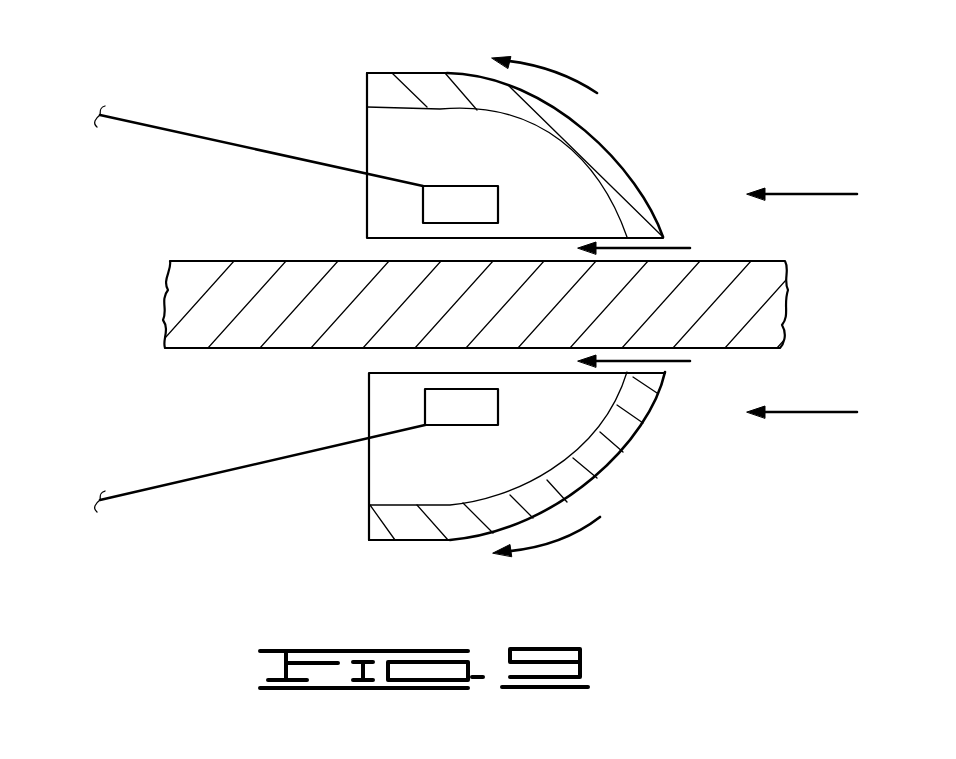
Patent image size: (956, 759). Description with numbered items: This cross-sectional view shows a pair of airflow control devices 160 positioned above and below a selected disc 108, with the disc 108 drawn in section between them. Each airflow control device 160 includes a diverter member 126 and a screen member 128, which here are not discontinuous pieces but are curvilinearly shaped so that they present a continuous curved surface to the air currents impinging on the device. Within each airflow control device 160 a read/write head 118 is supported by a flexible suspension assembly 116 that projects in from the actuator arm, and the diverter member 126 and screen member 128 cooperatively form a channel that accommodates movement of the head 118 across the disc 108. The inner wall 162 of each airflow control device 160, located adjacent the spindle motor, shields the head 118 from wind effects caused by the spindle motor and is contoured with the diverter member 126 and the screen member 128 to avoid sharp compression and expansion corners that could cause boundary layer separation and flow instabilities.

The disc 108 is at (190, 290).
The flexible suspension assembly 116 is at (268, 152).
The read/write head 118 is at (460, 186).
The diverter member 126 is at (611, 141).
The screen member 128 is at (423, 73).
The airflow control device 160 is at (372, 55).
The inner wall 162 is at (390, 130).